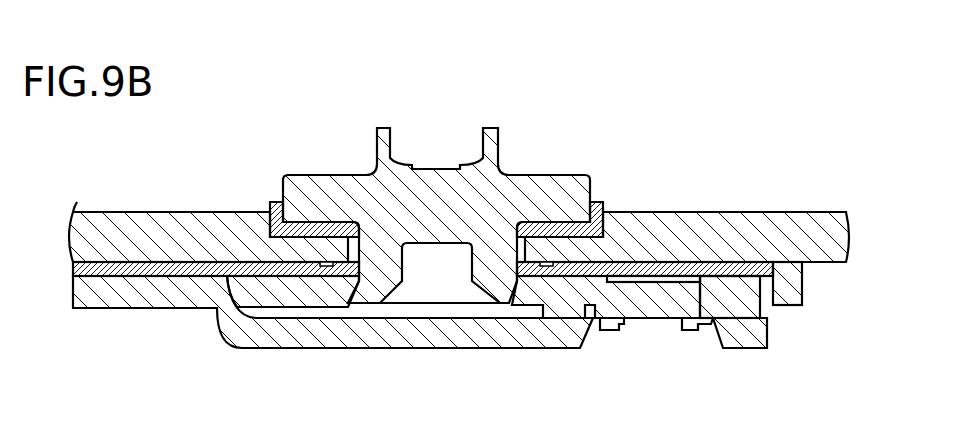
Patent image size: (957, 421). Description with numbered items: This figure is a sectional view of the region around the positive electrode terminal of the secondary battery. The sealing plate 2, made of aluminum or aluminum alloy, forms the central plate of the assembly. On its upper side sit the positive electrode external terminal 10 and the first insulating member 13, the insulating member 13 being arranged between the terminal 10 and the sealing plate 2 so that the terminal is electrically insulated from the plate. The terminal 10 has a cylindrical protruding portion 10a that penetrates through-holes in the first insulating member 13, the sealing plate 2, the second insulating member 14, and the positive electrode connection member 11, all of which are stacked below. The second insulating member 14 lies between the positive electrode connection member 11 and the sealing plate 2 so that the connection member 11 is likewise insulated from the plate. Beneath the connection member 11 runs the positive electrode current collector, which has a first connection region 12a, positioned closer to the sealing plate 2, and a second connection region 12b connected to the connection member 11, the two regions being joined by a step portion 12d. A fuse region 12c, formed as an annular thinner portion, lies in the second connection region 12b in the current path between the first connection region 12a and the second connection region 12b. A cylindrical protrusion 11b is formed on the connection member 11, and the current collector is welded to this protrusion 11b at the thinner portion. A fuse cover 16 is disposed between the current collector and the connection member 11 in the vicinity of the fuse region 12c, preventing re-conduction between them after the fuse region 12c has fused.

The sealing plate 2 is at (802, 213).
The positive electrode external terminal 10 is at (537, 173).
The protruding portion 10a is at (413, 296).
The positive electrode connection member 11 is at (733, 263).
The protrusion 11b is at (667, 320).
The first connection region 12a is at (393, 348).
The second connection region 12b is at (393, 348).
The fuse region 12c is at (603, 332).
The step portion 12d is at (228, 338).
The first insulating member 13 is at (605, 200).
The second insulating member 14 is at (682, 263).
The fuse cover 16 is at (770, 315).